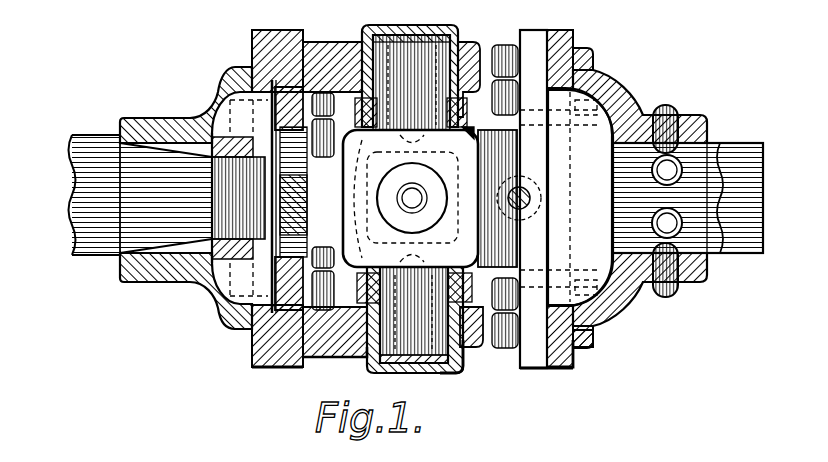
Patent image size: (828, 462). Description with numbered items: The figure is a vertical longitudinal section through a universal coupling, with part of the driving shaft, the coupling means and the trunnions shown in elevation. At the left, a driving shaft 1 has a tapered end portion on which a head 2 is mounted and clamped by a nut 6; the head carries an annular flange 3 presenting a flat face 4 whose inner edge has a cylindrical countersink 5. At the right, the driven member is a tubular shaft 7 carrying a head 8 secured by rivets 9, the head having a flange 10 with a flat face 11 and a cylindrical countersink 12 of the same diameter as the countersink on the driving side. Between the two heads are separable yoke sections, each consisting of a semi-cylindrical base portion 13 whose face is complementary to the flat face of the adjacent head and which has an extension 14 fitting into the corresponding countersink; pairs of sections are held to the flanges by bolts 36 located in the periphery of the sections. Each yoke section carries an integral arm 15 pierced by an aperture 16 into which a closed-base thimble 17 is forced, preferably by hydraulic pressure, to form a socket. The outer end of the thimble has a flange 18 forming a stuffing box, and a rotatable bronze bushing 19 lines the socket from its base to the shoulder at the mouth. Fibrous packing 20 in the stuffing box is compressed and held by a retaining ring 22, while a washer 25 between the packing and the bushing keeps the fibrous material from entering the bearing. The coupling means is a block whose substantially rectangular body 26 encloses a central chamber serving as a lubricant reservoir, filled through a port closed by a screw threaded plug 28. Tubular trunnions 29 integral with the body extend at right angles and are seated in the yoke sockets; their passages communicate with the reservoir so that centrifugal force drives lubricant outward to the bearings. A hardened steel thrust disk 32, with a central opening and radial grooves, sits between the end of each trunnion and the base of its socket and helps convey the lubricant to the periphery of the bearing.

The driving shaft 1 is at (88, 245).
The head 2 is at (148, 283).
The annular flange 3 is at (252, 340).
The flat face 4 is at (263, 364).
The countersink 5 is at (262, 318).
The nut 6 is at (230, 257).
The tubular shaft 7 is at (737, 263).
The head 8 is at (642, 275).
The rivets 9 is at (670, 107).
The flange 10 is at (562, 370).
The flat face 11 is at (573, 370).
The cylindrical countersink 12 is at (590, 347).
The semi-cylindrical base portion 13 is at (290, 58).
The extension 14 is at (265, 103).
The integral arm 15 is at (340, 57).
The aperture 16 is at (367, 347).
The thimble 17 is at (465, 355).
The flange 18 is at (357, 280).
The rotatable bushing 19 is at (482, 342).
The packing 20 is at (469, 132).
The retaining ring 22 is at (356, 112).
The washer 25 is at (490, 285).
The body 26 is at (467, 182).
The screw threaded plug 28 is at (445, 130).
The tubular trunnions 29 is at (462, 43).
The disk 32 is at (412, 327).
The bolts 36 is at (612, 92).